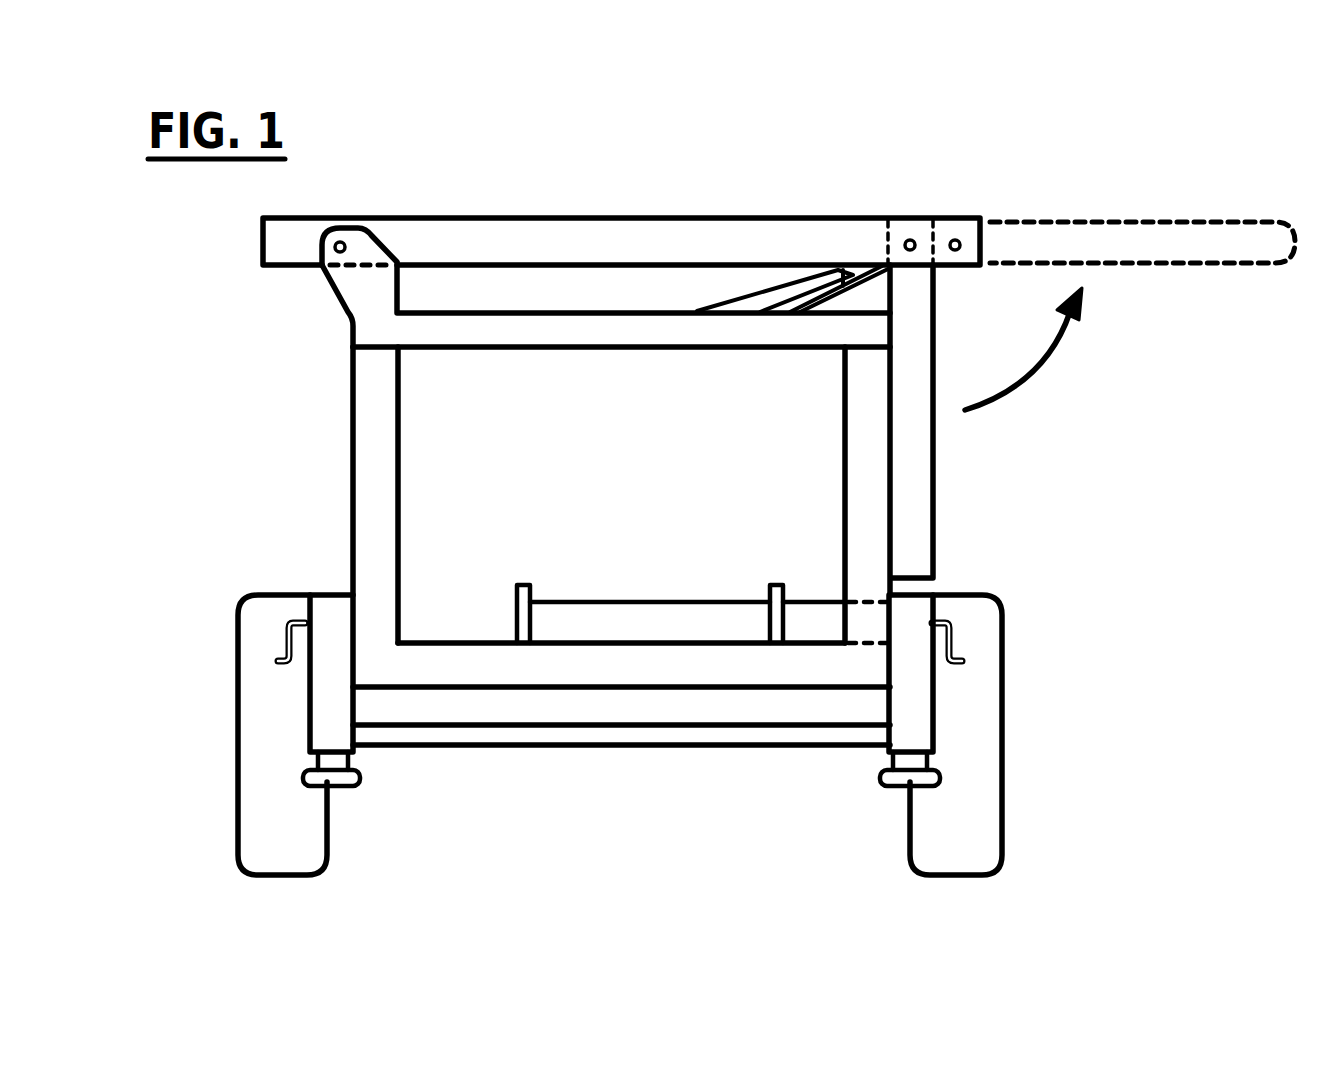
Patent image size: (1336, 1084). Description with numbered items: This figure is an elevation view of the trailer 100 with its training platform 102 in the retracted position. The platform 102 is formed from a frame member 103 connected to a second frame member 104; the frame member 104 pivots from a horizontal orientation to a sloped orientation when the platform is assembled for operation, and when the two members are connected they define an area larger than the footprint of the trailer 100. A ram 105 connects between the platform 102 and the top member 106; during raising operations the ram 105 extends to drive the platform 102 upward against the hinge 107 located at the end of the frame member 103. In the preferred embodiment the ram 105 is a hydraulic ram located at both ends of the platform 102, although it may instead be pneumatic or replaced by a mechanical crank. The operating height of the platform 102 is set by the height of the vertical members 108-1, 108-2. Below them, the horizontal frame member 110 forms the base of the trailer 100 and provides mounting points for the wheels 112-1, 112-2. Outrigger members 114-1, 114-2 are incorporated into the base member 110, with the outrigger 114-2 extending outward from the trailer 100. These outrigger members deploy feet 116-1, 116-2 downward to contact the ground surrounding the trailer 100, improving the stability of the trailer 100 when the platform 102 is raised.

The trailer 100 is at (1113, 199).
The platform 102 is at (438, 218).
The frame member 103 is at (560, 232).
The frame member 104 is at (934, 462).
The ram 105 is at (730, 294).
The top member 106 is at (795, 350).
The hinge 107 is at (330, 282).
The vertical member 108-1 is at (350, 398).
The vertical member 108-2 is at (843, 432).
The horizontal frame member 110 is at (517, 713).
The wheel 112-1 is at (236, 695).
The wheel 112-2 is at (1002, 660).
The outrigger member 114-1 is at (330, 590).
The outrigger member 114-2 is at (913, 605).
The foot 116-1 is at (333, 774).
The foot 116-2 is at (905, 774).